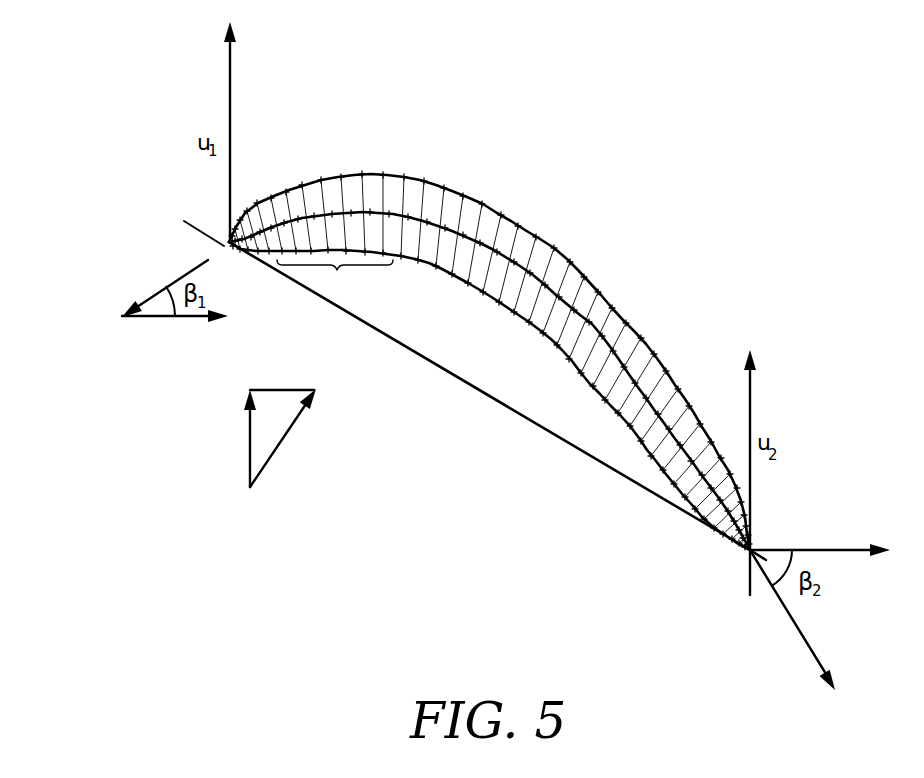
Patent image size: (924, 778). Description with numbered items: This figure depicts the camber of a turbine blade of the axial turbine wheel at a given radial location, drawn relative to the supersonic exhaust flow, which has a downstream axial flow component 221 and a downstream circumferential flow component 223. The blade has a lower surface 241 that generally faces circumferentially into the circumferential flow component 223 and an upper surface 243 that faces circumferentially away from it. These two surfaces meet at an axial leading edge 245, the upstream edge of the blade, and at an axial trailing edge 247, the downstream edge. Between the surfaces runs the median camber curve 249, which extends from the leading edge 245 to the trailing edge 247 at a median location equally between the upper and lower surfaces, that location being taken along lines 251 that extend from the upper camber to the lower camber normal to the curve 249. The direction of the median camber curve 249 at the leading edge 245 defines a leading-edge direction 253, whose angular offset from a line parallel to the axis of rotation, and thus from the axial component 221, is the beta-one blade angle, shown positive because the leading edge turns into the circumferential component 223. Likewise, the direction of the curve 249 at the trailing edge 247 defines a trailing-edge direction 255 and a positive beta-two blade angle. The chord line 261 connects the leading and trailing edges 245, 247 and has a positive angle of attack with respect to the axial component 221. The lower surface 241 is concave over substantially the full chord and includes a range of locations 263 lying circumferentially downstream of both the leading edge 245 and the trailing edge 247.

The downstream axial flow component 221 is at (277, 388).
The downstream circumferential flow component 223 is at (250, 432).
The lower surface 241 is at (572, 360).
The upper surface 243 is at (552, 249).
The axial leading edge 245 is at (227, 247).
The axial trailing edge 247 is at (748, 552).
The median camber curve 249 is at (478, 240).
The lines extending from the upper camber to the lower camber 251 is at (433, 207).
The leading-edge direction 253 is at (182, 280).
The trailing-edge direction 255 is at (808, 645).
The chord line 261 is at (452, 377).
The range of locations 263 is at (337, 272).